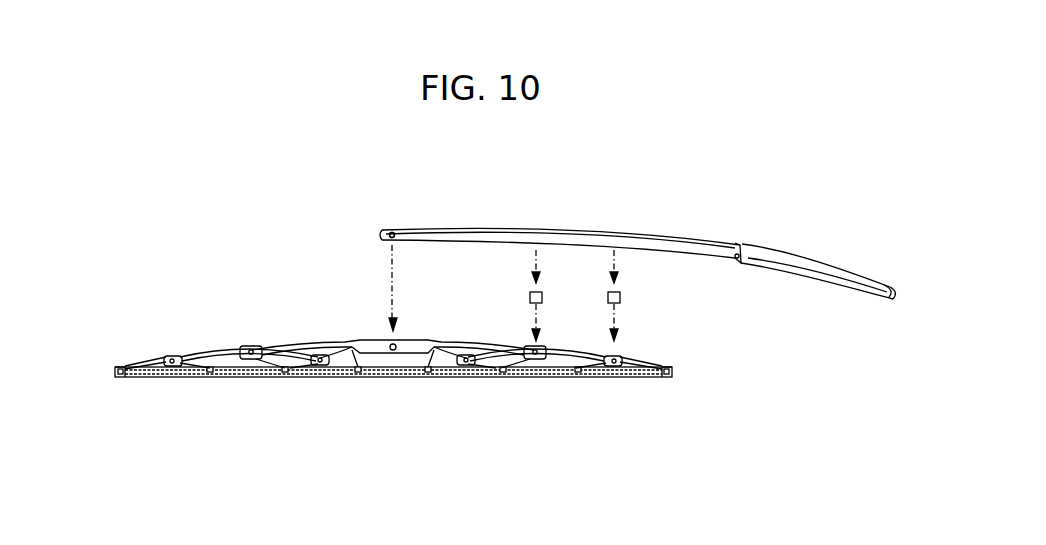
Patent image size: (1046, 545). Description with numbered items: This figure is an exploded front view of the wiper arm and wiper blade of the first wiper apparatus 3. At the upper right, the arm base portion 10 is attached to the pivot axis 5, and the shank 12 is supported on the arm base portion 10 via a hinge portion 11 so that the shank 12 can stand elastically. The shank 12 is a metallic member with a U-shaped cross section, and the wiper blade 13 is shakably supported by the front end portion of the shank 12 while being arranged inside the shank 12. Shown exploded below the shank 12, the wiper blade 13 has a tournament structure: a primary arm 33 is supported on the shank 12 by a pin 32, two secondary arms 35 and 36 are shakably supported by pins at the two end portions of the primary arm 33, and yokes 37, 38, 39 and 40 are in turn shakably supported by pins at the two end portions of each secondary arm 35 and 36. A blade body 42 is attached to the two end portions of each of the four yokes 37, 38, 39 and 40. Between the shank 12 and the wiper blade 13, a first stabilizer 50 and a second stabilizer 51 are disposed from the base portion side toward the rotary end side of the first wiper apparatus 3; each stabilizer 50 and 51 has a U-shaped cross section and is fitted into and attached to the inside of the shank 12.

The first wiper apparatus 3 is at (351, 203).
The pivot axis 5 is at (890, 287).
The arm base portion 10 is at (790, 260).
The hinge portion 11 is at (737, 260).
The shank 12 is at (583, 228).
The wiper blade 13 is at (442, 377).
The pin 32 is at (392, 232).
The primary arm 33 is at (384, 340).
The secondary arm 35 is at (565, 346).
The secondary arm 36 is at (198, 352).
The yoke 37 is at (660, 362).
The yoke 38 is at (487, 368).
The yoke 39 is at (302, 372).
The yoke 40 is at (143, 362).
The blade body 42 is at (222, 378).
The first stabilizer 50 is at (622, 295).
The second stabilizer 51 is at (530, 293).